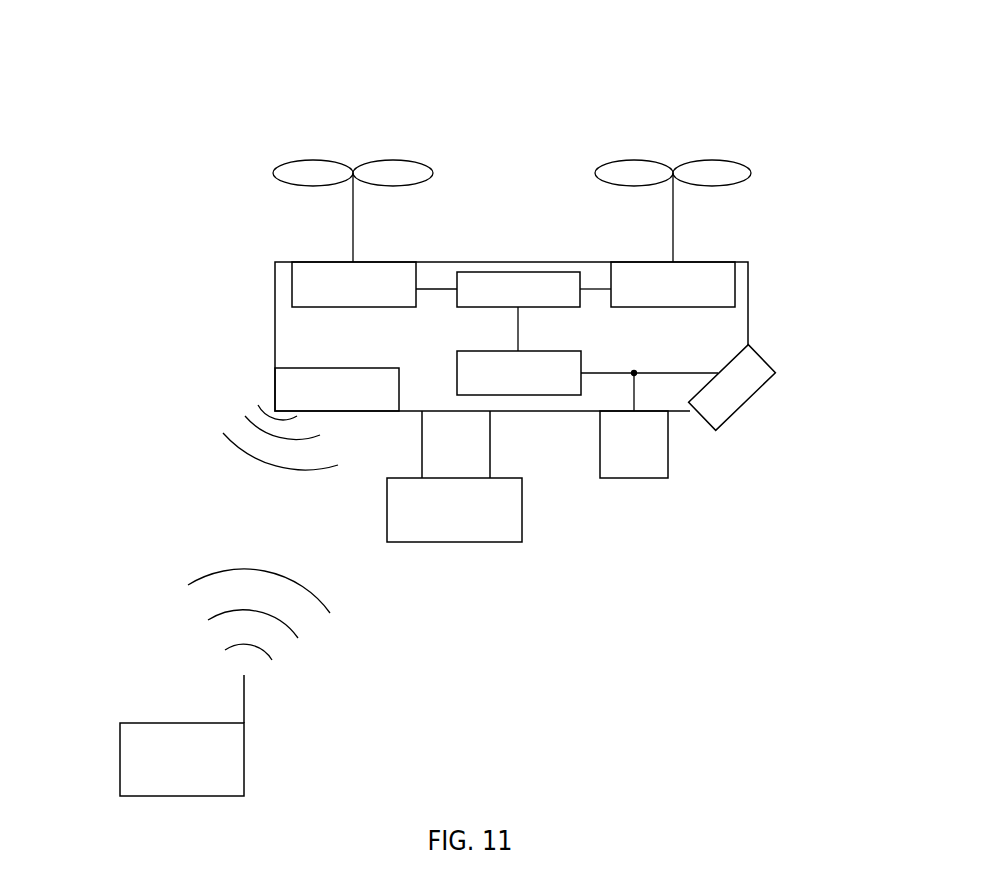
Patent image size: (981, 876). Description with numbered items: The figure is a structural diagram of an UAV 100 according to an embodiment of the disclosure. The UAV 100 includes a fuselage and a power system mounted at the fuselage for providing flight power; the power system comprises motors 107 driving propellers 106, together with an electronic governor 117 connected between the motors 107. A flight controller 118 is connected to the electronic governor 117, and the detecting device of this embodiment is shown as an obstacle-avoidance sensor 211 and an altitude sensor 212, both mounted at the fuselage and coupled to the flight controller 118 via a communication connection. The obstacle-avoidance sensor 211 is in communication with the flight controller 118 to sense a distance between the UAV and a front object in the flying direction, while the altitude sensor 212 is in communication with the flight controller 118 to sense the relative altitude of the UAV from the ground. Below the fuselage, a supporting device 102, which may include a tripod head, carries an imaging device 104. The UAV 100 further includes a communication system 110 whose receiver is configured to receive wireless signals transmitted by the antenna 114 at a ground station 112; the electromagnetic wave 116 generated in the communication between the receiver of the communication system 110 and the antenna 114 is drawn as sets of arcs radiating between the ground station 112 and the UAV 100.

The UAV 100 is at (815, 50).
The supporting device 102 is at (456, 444).
The imaging device 104 is at (454, 510).
The propeller 106 is at (395, 140).
The motor 107 is at (513, 284).
The communication system 110 is at (337, 389).
The ground station 112 is at (182, 759).
The antenna 114 is at (258, 702).
The electromagnetic wave 116 is at (217, 420).
The electronic governor 117 is at (518, 311).
The flight controller 118 is at (587, 381).
The obstacle-avoidance sensor 211 is at (732, 388).
The altitude sensor 212 is at (634, 444).